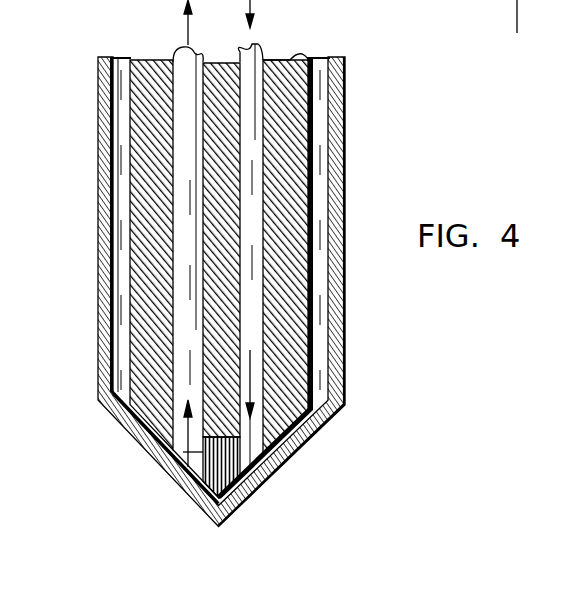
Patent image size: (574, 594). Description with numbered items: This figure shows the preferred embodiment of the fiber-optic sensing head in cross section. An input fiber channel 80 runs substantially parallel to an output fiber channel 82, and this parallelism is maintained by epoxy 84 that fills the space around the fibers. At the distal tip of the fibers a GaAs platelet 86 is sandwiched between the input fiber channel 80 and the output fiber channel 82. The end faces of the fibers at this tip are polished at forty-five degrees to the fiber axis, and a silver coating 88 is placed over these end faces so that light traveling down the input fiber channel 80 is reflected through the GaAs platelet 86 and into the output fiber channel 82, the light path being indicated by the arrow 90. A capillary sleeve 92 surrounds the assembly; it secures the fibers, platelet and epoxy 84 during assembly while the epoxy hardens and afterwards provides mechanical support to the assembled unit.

The input fiber channel 80 is at (250, 50).
The output fiber channel 82 is at (181, 50).
The epoxy 84 is at (227, 63).
The GaAs platelet 86 is at (230, 480).
The silver coating 88 is at (113, 415).
The arrow 90 is at (183, 452).
The capillary sleeve 92 is at (98, 136).